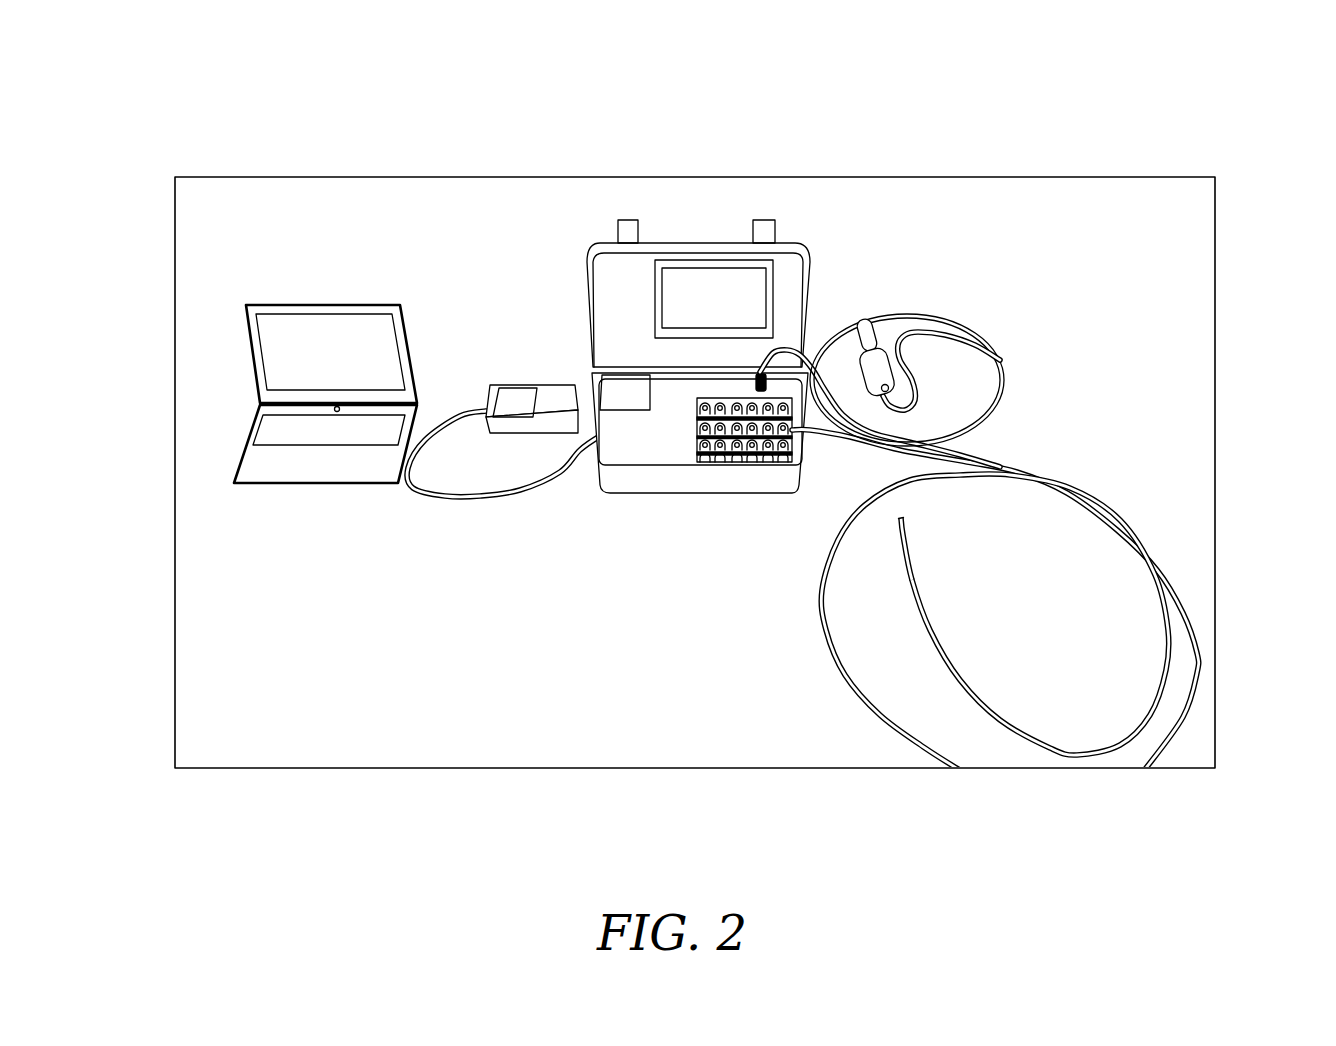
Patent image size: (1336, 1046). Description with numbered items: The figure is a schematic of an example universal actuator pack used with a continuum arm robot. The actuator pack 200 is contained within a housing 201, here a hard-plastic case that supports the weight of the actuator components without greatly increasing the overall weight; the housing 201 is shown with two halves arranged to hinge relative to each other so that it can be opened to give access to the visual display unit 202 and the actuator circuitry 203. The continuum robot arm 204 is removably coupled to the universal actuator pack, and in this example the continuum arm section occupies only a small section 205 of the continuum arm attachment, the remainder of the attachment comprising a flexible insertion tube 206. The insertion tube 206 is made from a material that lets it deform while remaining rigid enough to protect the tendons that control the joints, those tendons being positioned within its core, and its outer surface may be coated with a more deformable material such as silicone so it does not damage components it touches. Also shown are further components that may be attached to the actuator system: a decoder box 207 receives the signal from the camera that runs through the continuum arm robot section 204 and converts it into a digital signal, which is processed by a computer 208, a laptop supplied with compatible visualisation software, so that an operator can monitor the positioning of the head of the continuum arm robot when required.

The actuator pack 200 is at (186, 101).
The housing 201 is at (793, 268).
The visual display unit 202 is at (702, 290).
The actuator circuitry 203 is at (800, 368).
The continuum robot arm 204 is at (973, 582).
The small section 205 is at (1170, 676).
The insertion tube 206 is at (1035, 493).
The decoder box 207 is at (517, 403).
The computer 208 is at (283, 353).